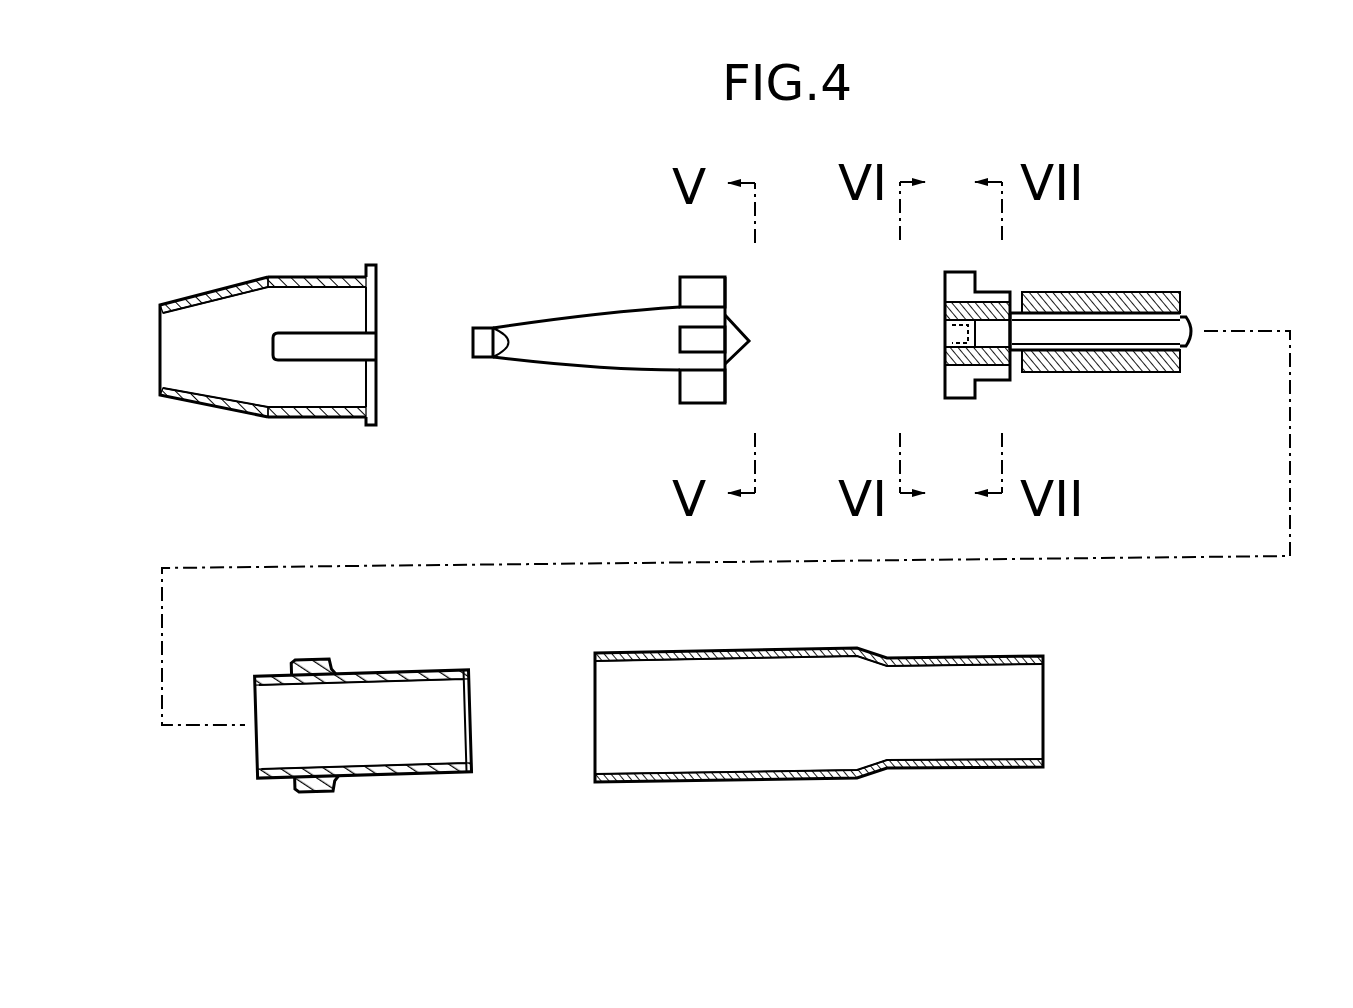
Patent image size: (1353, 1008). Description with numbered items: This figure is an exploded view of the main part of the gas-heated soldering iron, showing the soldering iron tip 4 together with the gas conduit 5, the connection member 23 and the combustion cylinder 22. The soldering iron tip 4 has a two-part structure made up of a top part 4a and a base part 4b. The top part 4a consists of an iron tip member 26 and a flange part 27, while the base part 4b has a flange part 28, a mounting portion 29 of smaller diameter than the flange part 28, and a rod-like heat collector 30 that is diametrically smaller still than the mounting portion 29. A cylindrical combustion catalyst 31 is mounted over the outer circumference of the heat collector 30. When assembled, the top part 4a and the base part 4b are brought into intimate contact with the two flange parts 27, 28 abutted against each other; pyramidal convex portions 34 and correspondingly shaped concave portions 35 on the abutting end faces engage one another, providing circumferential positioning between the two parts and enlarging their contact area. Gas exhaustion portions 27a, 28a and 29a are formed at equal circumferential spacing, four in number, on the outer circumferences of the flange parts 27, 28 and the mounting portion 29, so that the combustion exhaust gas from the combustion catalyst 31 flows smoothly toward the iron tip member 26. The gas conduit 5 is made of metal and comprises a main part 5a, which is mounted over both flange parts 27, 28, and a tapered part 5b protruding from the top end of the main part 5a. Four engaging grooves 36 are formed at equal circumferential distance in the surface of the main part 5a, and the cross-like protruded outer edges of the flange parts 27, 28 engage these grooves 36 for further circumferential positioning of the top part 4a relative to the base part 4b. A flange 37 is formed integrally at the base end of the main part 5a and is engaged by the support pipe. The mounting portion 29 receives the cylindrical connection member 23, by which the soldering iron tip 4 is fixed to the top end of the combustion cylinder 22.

The soldering iron tip 4 is at (1103, 199).
The top part 4a is at (601, 289).
The base part 4b is at (1189, 272).
The gas conduit 5 is at (236, 261).
The main part 5a is at (367, 305).
The tapered part 5b is at (195, 397).
The combustion cylinder 22 is at (923, 768).
The connection member 23 is at (387, 772).
The iron tip member 26 is at (572, 357).
The flange part 27 is at (687, 288).
The gas exhaustion portion 27a is at (705, 317).
The flange part 28 is at (963, 282).
The gas exhaustion portion 28a is at (970, 313).
The mounting portion 29 is at (993, 297).
The gas exhaustion portion 29a is at (997, 357).
The heat collector 30 is at (1127, 328).
The combustion catalyst 31 is at (1140, 367).
The convex portion 34 is at (731, 347).
The concave portion 35 is at (943, 332).
The engaging groove 36 is at (317, 343).
The flange 37 is at (373, 427).